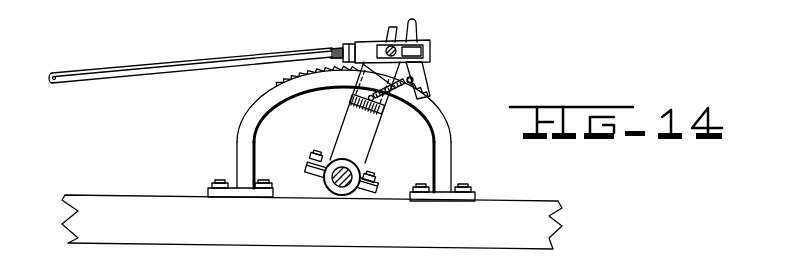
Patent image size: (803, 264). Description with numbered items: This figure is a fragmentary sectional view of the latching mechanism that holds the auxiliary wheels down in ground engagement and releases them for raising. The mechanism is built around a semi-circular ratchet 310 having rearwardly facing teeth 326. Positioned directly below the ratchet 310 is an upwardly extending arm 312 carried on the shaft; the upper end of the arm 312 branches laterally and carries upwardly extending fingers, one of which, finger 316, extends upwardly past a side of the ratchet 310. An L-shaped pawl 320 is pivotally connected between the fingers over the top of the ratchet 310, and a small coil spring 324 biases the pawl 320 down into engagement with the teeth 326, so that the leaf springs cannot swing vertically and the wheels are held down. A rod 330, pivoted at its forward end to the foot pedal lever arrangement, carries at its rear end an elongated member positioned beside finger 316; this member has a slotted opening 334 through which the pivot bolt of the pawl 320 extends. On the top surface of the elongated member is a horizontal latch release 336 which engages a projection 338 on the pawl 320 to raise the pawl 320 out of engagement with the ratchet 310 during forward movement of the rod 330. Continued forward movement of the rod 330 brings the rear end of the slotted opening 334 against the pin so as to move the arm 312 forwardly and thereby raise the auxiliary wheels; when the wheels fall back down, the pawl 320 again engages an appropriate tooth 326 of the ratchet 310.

The semi-circular ratchet 310 is at (433, 138).
The arm 312 is at (371, 153).
The finger 316 is at (356, 93).
The L-shaped pawl 320 is at (418, 73).
The coil spring 324 is at (366, 62).
The teeth 326 is at (272, 86).
The rod 330 is at (128, 67).
The slotted opening 334 is at (432, 50).
The horizontal latch release 336 is at (418, 26).
The projection 338 is at (396, 26).